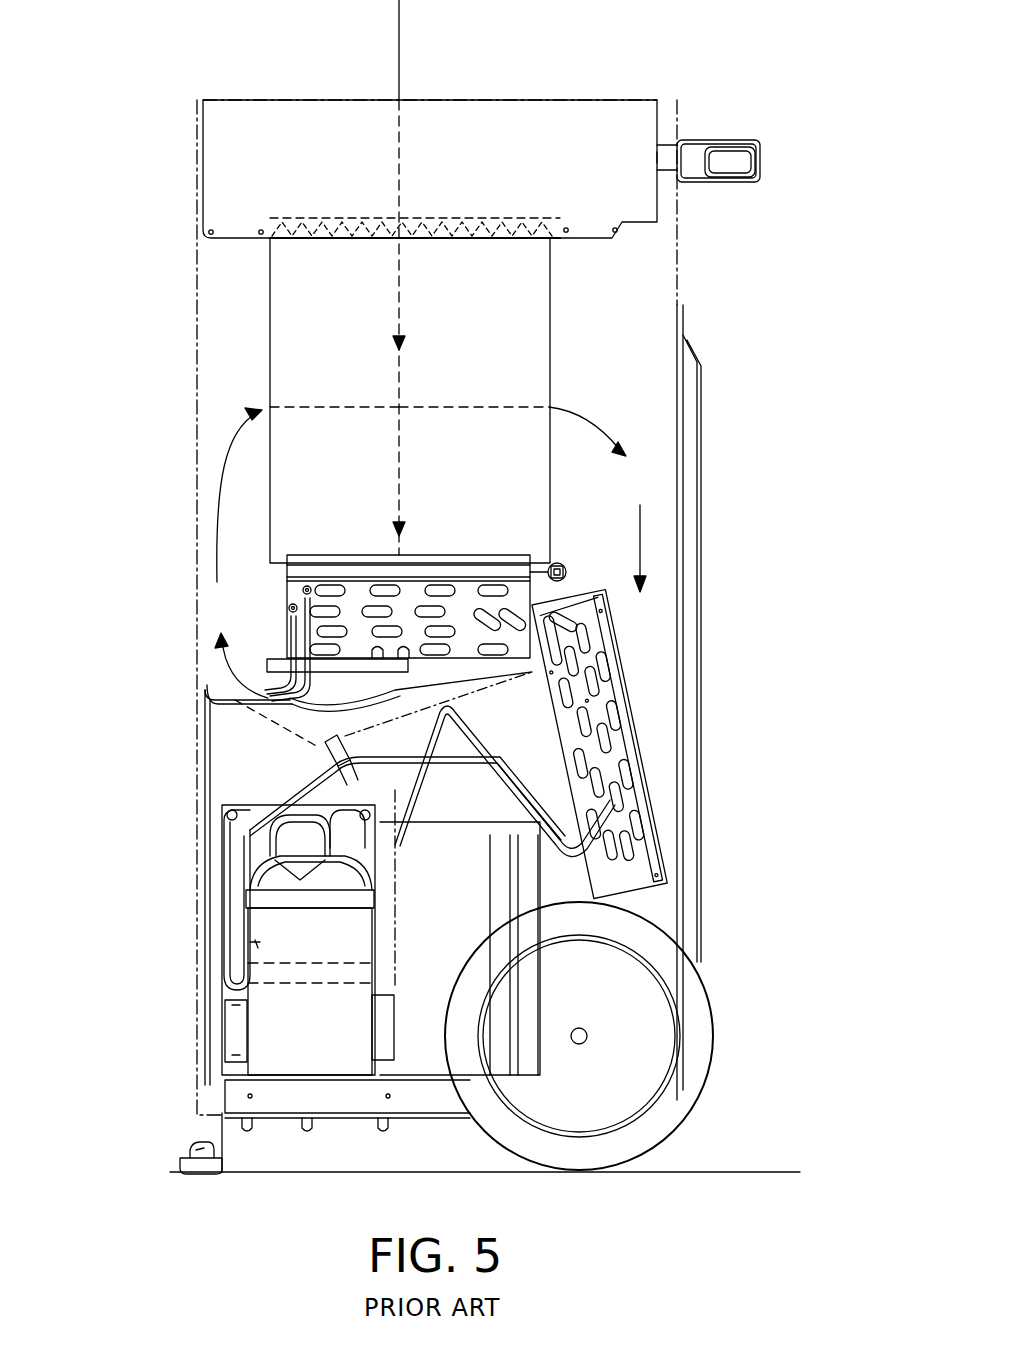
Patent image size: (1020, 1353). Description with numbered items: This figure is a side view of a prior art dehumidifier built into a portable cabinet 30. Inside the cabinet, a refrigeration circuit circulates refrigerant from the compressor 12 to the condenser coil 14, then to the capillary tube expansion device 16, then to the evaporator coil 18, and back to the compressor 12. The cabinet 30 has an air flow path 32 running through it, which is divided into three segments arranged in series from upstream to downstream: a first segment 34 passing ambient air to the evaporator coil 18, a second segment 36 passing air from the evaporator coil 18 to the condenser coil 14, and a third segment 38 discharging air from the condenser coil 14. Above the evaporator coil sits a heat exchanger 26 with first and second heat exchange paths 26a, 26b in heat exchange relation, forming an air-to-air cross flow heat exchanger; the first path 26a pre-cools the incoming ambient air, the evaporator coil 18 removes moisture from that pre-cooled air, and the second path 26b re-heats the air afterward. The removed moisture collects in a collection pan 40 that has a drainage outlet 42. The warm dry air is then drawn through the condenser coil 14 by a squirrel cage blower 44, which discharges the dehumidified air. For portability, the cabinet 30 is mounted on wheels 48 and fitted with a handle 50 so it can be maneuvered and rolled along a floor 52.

The compressor 12 is at (262, 947).
The condenser coil 14 is at (615, 770).
The capillary tube expansion device 16 is at (205, 840).
The evaporator coil 18 is at (428, 588).
The heat exchanger 26 is at (270, 293).
The first heat exchange path 26a is at (396, 352).
The second heat exchange path 26b is at (503, 407).
The portable cabinet 30 is at (197, 322).
The air flow path 32 is at (399, 40).
The first segment 34 is at (397, 526).
The second segment 36 is at (220, 425).
The third segment 38 is at (446, 776).
The collection pan 40 is at (325, 742).
The drainage outlet 42 is at (335, 768).
The squirrel cage blower 44 is at (428, 838).
The wheels 48 is at (693, 1080).
The handle 50 is at (724, 158).
The floor 52 is at (718, 1172).